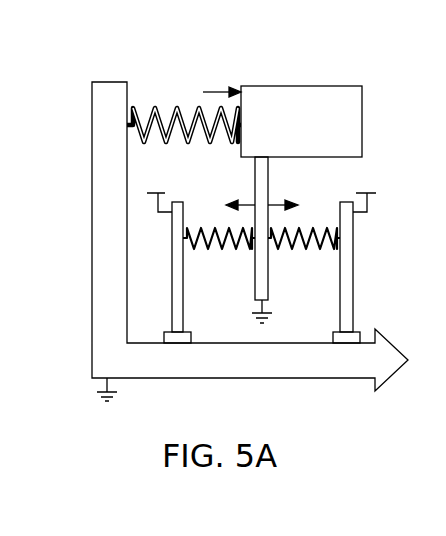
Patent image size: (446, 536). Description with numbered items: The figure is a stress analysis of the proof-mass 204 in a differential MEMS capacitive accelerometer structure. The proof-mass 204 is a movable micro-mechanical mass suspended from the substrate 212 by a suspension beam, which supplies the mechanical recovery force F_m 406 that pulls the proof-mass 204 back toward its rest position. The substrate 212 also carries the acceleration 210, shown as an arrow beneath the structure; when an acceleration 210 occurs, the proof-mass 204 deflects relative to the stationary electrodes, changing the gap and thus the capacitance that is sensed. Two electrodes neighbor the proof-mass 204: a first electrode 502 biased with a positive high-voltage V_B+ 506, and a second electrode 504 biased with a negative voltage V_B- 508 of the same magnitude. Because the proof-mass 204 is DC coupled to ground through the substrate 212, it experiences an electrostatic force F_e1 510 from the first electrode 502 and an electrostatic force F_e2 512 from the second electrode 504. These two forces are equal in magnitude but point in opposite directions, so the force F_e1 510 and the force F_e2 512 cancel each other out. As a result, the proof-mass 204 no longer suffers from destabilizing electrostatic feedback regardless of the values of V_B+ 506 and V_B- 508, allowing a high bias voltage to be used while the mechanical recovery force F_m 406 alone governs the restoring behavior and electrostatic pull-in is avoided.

The proof-mass 204 is at (327, 86).
The acceleration 210 is at (322, 378).
The substrate 212 is at (92, 116).
The mechanical recovery force F_m 406 is at (190, 72).
The first electrode 502 is at (172, 297).
The second electrode 504 is at (353, 285).
The positive high-voltage bias V_B+ 506 is at (163, 168).
The negative bias voltage V_B- 508 is at (375, 162).
The electrostatic force F_e1 510 is at (208, 188).
The electrostatic force F_e2 512 is at (312, 190).